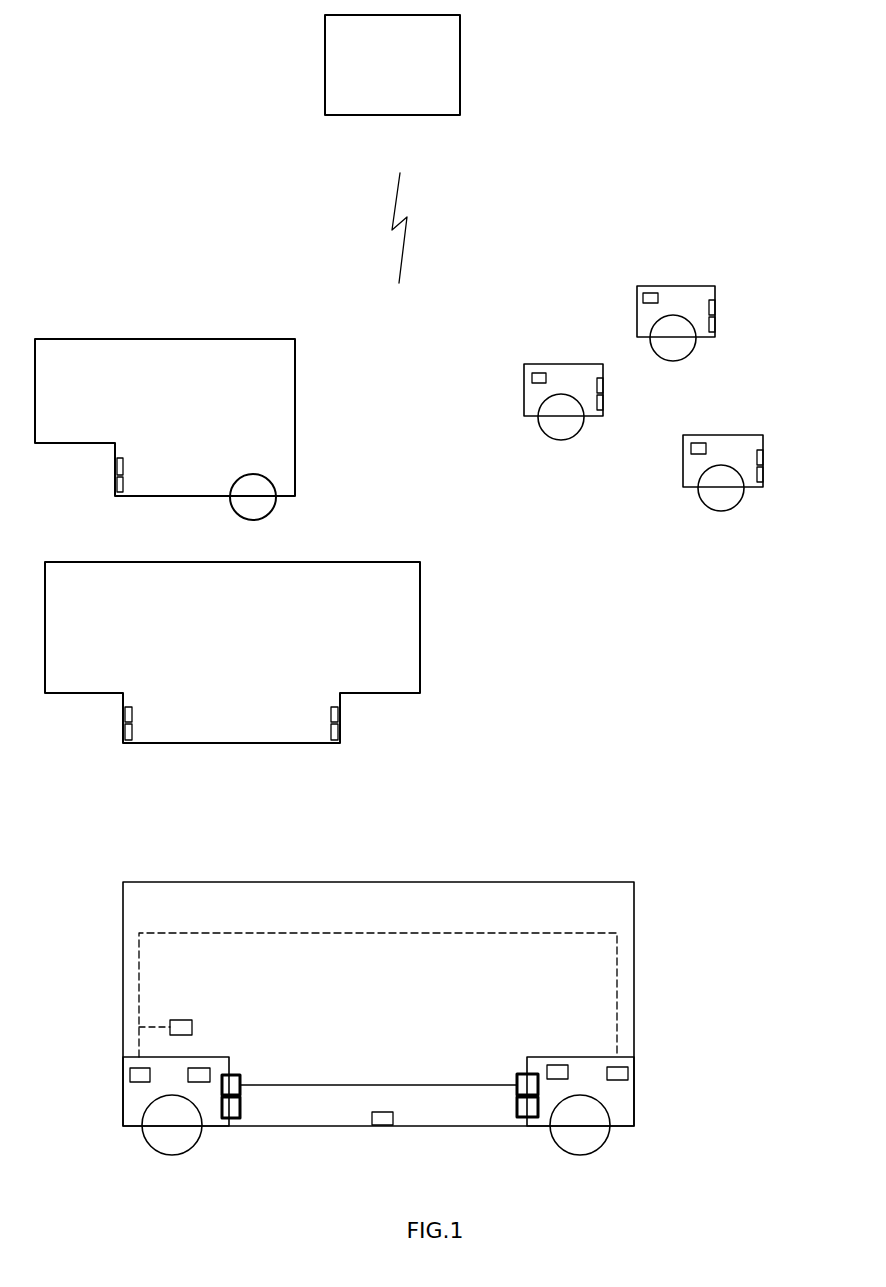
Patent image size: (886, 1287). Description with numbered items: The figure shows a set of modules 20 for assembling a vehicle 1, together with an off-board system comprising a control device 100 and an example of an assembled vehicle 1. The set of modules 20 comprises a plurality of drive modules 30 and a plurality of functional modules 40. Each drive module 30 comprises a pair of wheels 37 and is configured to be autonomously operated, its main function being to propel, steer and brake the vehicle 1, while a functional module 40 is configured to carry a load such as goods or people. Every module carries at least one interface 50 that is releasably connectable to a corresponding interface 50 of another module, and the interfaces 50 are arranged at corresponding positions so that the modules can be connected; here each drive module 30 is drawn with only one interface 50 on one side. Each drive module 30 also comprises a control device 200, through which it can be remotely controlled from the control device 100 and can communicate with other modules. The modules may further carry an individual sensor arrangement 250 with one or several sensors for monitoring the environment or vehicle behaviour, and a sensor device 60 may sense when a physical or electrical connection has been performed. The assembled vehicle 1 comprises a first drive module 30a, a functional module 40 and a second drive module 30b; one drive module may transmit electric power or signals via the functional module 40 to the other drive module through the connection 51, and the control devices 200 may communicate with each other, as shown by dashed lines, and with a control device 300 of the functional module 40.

The vehicle 1 is at (690, 870).
The set of modules 20 is at (308, 288).
The drive module 30 is at (668, 286).
The first drive module 30a is at (122, 1107).
The second drive module 30b is at (635, 1113).
The wheels 37 is at (272, 503).
The functional module 40 is at (296, 434).
The interface 50 is at (116, 465).
The connection 51 is at (400, 1085).
The sensor device 60 is at (116, 485).
The control device 100 is at (392, 65).
The control device 200 is at (643, 296).
The sensor arrangement 250 is at (210, 1068).
The control device 300 is at (192, 1027).